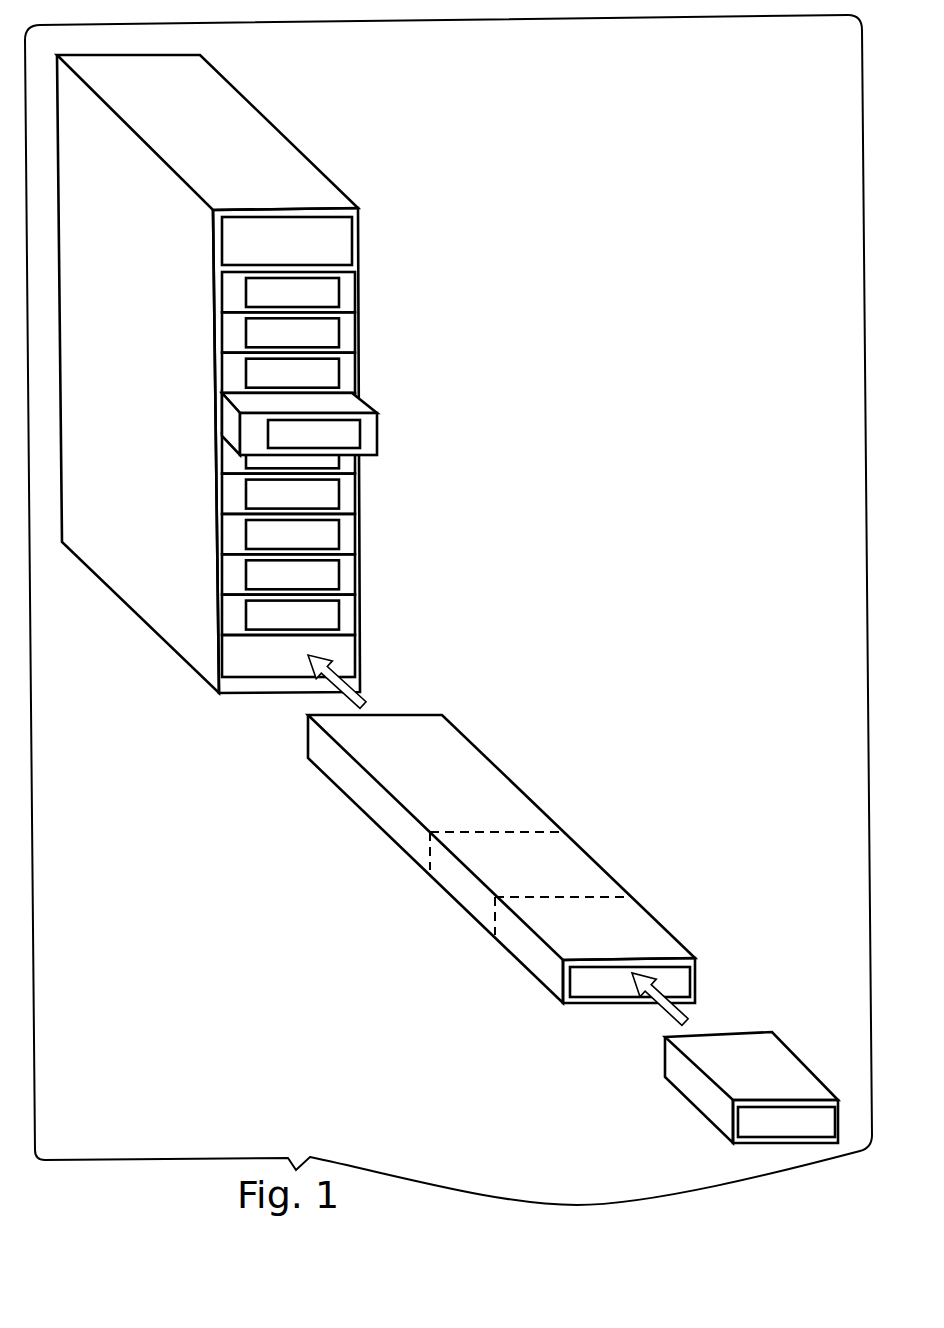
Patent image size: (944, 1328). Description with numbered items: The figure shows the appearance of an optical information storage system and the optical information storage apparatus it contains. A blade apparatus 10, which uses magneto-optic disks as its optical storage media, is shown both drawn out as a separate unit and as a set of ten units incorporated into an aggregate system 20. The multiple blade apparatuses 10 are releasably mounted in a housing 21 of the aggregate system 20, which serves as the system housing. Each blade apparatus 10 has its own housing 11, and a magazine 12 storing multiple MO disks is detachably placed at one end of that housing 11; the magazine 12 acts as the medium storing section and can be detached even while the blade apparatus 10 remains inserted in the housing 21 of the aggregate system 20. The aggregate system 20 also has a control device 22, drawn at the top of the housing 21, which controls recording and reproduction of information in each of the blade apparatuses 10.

The blade apparatus 10 is at (352, 612).
The housing 11 is at (500, 780).
The magazine 12 is at (370, 432).
The aggregate system 20 is at (449, 599).
The housing 21 is at (171, 637).
The control device 22 is at (345, 242).